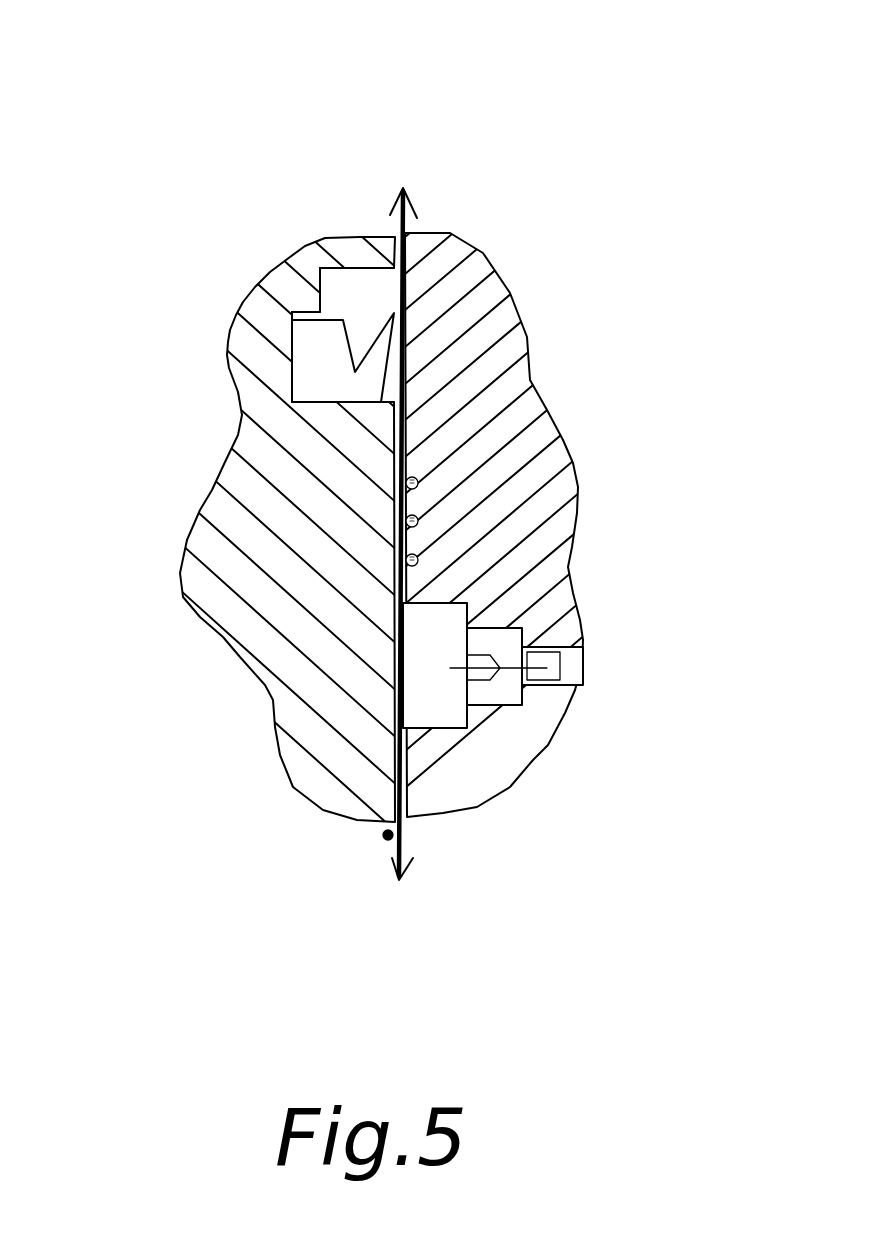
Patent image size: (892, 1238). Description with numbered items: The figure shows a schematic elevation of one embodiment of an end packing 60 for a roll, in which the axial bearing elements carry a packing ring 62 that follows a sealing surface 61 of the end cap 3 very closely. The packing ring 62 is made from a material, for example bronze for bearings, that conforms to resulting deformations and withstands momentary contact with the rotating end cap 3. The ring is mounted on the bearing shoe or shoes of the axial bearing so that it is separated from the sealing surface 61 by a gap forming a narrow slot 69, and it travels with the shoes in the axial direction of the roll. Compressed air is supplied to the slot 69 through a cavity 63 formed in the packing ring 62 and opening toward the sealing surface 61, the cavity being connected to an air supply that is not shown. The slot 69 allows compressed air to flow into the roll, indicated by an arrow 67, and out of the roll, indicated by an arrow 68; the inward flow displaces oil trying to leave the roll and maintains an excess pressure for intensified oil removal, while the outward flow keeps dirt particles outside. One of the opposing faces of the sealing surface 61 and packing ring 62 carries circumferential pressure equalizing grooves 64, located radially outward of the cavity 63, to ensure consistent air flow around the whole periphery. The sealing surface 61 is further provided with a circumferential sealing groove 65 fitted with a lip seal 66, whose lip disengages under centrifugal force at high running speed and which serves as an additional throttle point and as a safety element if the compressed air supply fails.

The sealing unit 60 is at (394, 481).
The end cap 3 is at (303, 727).
The sealing surface 61 is at (405, 788).
The packing ring 62 is at (498, 777).
The cavity 63 is at (443, 620).
The pressure equalizing grooves 64 is at (418, 558).
The circumferential sealing groove 65 is at (340, 295).
The lip seal 66 is at (322, 350).
The arrow 67 is at (398, 228).
The arrow 68 is at (404, 826).
The narrow slot 69 is at (388, 835).